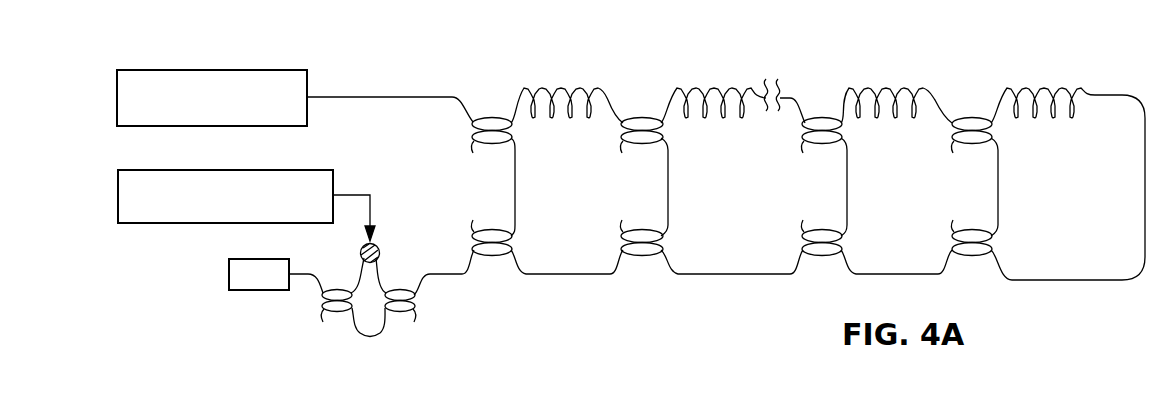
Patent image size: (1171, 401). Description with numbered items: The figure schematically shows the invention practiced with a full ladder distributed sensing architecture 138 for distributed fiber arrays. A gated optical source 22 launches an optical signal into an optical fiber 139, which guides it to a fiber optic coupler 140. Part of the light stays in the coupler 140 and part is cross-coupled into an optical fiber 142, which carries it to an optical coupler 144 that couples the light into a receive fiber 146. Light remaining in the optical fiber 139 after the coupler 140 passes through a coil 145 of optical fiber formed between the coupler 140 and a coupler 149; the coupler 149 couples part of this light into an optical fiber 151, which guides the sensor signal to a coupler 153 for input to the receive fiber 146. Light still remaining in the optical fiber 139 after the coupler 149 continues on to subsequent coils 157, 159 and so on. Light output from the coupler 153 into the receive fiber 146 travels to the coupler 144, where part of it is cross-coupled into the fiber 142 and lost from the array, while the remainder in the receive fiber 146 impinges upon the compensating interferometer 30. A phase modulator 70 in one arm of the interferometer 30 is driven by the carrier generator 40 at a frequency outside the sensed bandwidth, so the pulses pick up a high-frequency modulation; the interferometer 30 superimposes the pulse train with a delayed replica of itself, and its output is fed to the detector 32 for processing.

The gated optical source 22 is at (292, 70).
The carrier generator 40 is at (118, 206).
The detector 32 is at (229, 274).
The compensating interferometer 30 is at (385, 330).
The phase modulator 70 is at (380, 250).
The optical fiber 139 is at (442, 95).
The fiber optic coupler 140 is at (462, 133).
The full ladder distributed sensing architecture 138 is at (500, 187).
The optical fiber 142 is at (516, 158).
The optical coupler 144 is at (512, 244).
The coil of optical fiber 145 is at (572, 132).
The receive fiber 146 is at (447, 275).
The coupler 149 is at (664, 134).
The optical fiber 151 is at (670, 171).
The coupler 153 is at (666, 244).
The coil 157 is at (750, 75).
The coil 159 is at (905, 135).